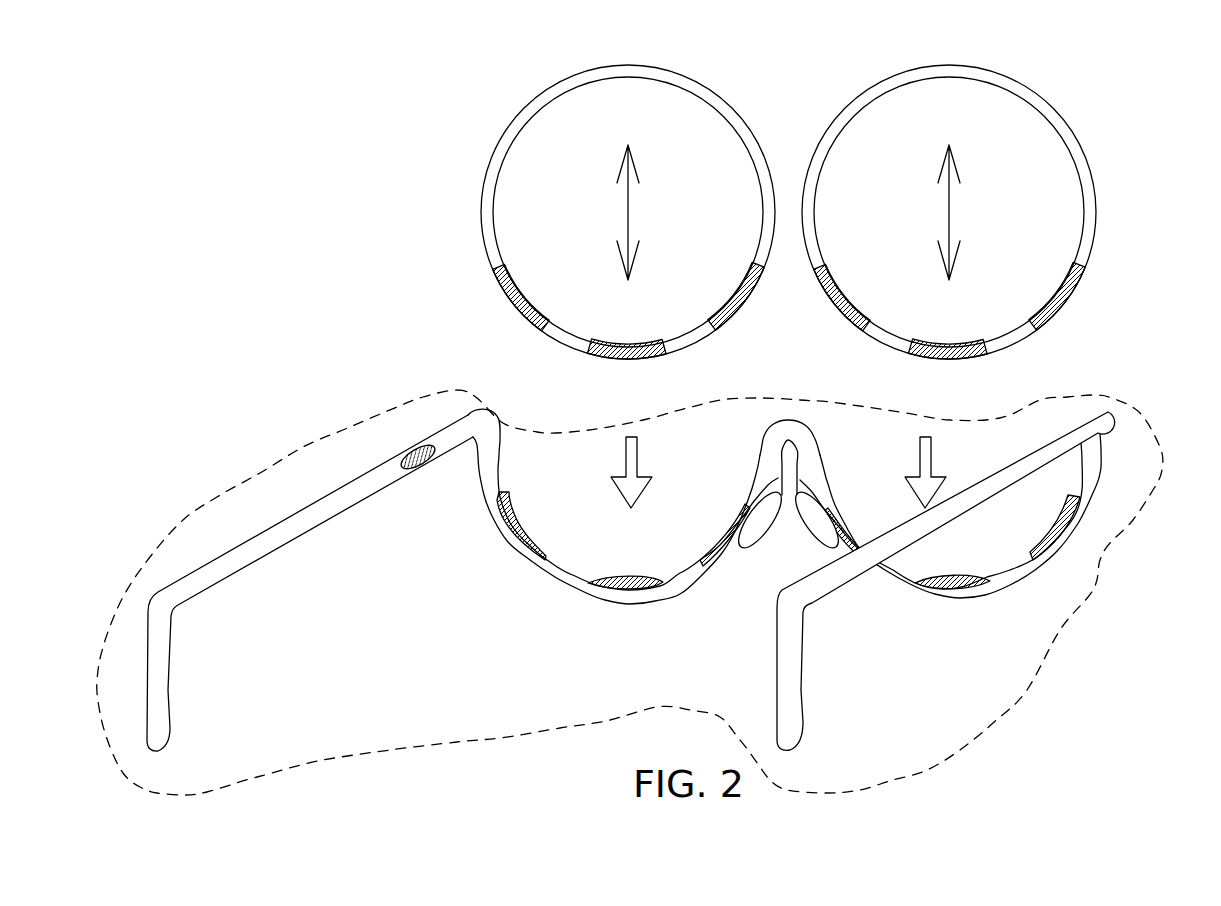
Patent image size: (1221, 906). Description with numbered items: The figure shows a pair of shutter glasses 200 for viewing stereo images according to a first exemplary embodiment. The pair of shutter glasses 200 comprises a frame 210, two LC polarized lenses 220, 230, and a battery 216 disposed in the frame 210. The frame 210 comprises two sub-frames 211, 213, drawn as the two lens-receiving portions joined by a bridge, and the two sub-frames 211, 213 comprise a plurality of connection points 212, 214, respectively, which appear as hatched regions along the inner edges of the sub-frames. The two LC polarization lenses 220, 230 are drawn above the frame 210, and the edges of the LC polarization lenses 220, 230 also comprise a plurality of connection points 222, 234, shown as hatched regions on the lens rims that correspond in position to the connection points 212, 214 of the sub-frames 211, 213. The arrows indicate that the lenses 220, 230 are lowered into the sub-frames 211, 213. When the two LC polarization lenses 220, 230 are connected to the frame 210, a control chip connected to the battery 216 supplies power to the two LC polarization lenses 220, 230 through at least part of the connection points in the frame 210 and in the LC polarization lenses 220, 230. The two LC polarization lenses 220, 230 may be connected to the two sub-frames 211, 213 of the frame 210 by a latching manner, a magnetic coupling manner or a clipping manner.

The pair of shutter glasses 200 is at (300, 103).
The frame 210 is at (684, 555).
The sub-frame 211 is at (497, 458).
The connection points 212 is at (690, 587).
The sub-frame 213 is at (1098, 457).
The connection points 214 is at (1027, 580).
The battery 216 is at (413, 447).
The LC polarized lens 220 is at (603, 243).
The connection points 222 is at (723, 320).
The LC polarized lens 230 is at (985, 245).
The connection points 234 is at (1044, 320).